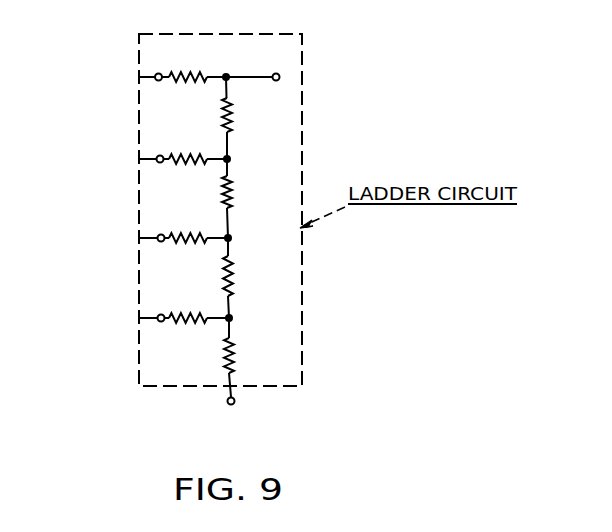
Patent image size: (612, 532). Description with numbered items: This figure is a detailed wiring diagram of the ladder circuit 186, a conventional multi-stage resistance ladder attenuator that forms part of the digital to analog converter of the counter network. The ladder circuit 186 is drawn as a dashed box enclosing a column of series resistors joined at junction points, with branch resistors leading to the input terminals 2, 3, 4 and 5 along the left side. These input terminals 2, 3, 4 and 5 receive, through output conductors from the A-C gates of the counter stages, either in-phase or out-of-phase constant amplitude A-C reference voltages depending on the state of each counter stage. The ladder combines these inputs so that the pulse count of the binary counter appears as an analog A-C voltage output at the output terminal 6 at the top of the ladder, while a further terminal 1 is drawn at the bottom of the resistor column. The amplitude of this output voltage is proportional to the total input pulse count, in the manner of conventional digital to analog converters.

The terminal 1 is at (227, 404).
The input terminal 2 is at (139, 318).
The input terminal 3 is at (139, 238).
The input terminal 4 is at (139, 159).
The input terminal 5 is at (139, 77).
The output terminal 6 is at (280, 77).
The ladder circuit 186 is at (138, 193).